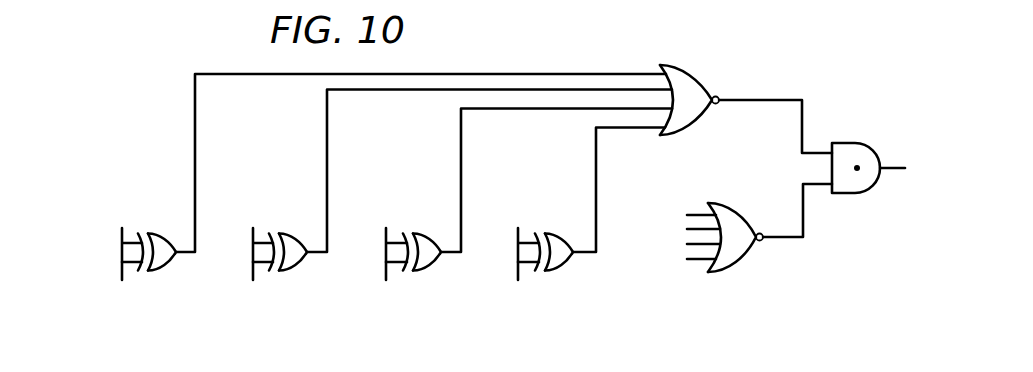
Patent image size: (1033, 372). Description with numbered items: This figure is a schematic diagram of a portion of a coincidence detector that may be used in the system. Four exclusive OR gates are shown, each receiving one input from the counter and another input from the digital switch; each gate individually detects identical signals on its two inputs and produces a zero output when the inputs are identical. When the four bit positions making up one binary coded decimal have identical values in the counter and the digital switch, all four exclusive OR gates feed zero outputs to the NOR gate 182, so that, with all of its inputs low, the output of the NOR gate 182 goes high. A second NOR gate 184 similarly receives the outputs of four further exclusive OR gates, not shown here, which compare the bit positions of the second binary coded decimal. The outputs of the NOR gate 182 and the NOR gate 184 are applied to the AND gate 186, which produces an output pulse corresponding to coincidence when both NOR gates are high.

The NOR gate 182 is at (692, 72).
The NOR gate 184 is at (758, 197).
The AND gate 186 is at (872, 118).